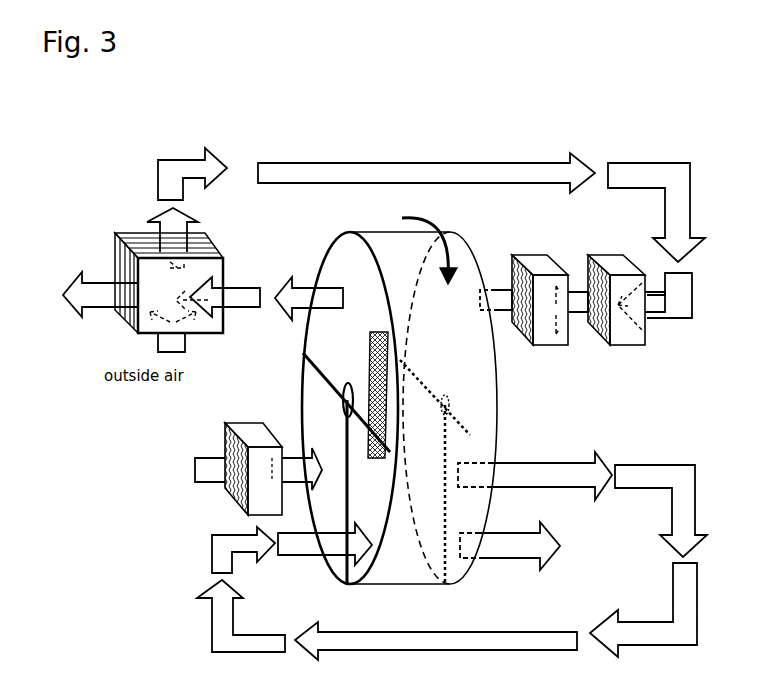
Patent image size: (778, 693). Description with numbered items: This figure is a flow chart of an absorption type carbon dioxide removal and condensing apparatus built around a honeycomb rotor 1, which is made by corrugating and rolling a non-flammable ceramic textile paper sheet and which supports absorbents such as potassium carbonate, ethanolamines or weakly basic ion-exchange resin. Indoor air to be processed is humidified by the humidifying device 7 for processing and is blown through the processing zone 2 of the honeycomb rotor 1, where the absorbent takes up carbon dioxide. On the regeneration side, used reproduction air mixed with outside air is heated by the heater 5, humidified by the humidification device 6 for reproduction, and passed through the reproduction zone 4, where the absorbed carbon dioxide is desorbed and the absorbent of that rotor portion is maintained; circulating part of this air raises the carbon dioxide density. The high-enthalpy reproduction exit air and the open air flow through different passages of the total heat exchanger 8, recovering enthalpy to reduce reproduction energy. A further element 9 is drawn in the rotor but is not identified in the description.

The honeycomb rotor 1 is at (407, 565).
The processing zone 2 is at (318, 422).
The reproduction zone 4 is at (337, 273).
The heater 5 is at (615, 258).
The humidification device for reproduction 6 is at (530, 258).
The humidifying device for processing 7 is at (255, 430).
The total heat exchanger 8 is at (213, 258).
The baffle 9 is at (375, 512).